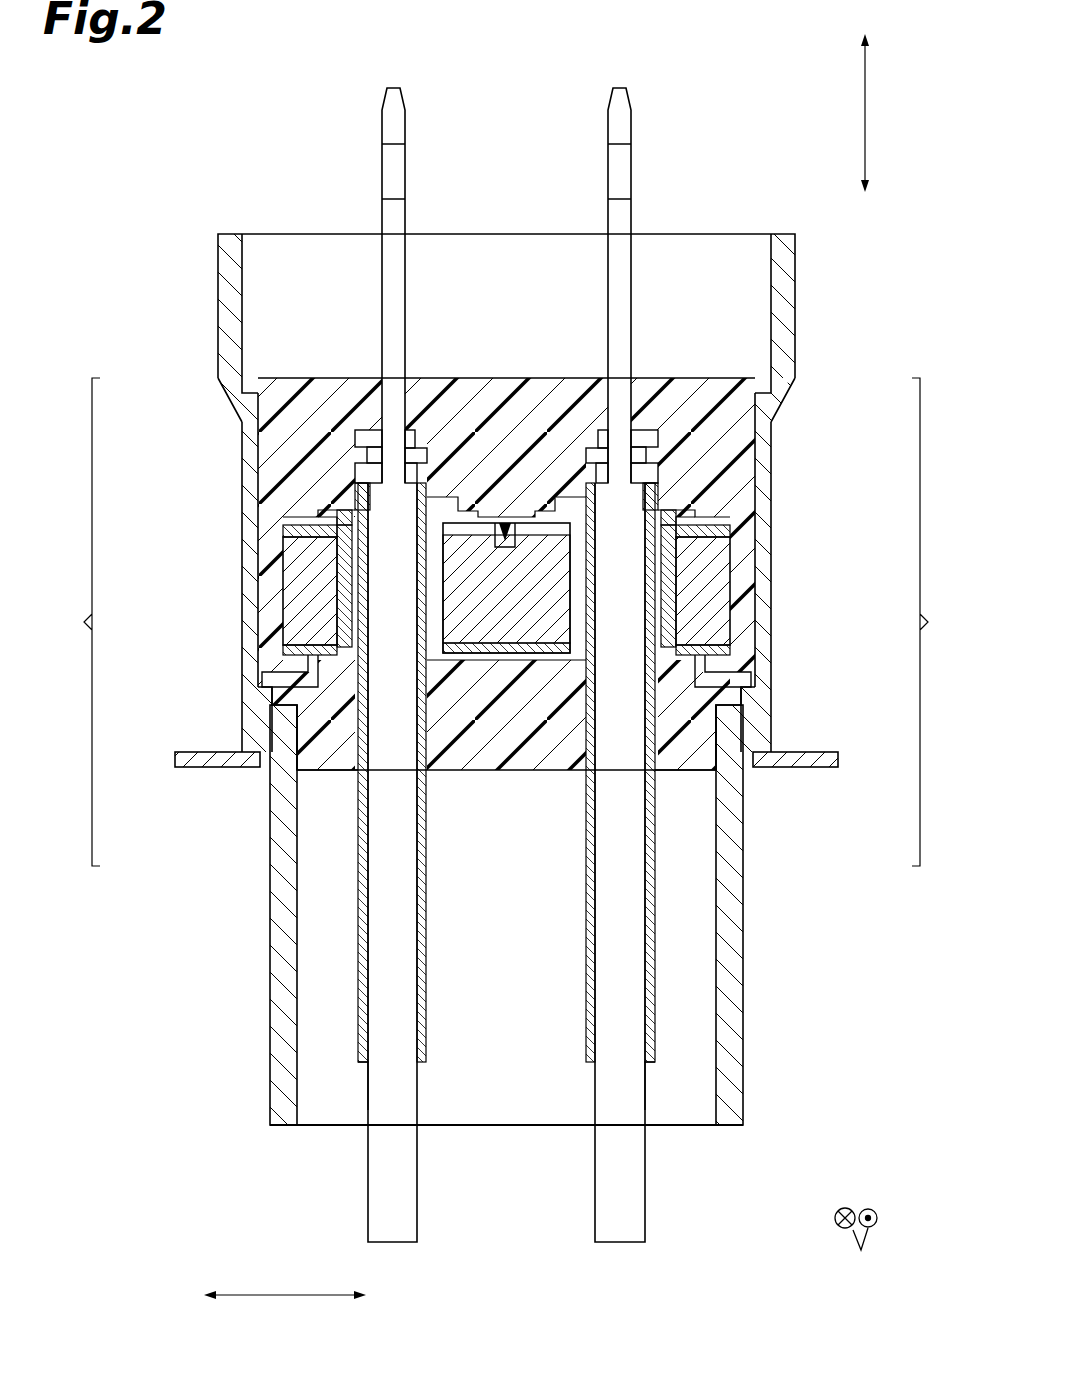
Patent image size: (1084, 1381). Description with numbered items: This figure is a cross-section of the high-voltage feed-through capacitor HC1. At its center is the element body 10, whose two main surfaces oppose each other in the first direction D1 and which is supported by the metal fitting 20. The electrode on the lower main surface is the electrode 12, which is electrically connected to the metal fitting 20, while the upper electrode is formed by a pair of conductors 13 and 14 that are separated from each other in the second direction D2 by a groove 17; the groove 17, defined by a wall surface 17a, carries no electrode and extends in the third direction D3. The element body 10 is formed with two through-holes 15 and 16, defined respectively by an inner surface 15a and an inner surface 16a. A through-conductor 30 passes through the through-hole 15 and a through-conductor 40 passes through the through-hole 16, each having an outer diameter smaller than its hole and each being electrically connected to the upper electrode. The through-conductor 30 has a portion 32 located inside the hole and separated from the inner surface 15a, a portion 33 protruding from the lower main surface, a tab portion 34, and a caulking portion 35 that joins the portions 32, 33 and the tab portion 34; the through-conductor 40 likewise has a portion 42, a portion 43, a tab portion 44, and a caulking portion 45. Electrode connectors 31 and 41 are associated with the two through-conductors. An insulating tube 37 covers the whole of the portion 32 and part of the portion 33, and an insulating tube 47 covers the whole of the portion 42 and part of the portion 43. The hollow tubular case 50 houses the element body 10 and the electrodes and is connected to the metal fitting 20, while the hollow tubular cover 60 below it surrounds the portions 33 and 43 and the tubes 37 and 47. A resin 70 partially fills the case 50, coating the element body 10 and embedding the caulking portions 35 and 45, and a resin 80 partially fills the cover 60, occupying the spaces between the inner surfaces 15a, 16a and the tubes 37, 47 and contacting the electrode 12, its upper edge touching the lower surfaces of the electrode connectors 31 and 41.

The high-voltage feed-through capacitor HC1 is at (245, 116).
The first direction D1 is at (873, 108).
The second direction D2 is at (290, 1300).
The third direction D3 is at (857, 1247).
The element body 10 is at (300, 600).
The electrode 12 is at (300, 655).
The conductor 13 is at (305, 540).
The conductor 14 is at (733, 530).
The through-hole 15 is at (300, 755).
The inner surface 15a is at (348, 557).
The through-hole 16 is at (700, 735).
The inner surface 16a is at (663, 577).
The groove 17 is at (505, 512).
The wall surface 17a is at (516, 524).
The metal fitting 20 is at (228, 752).
The through-conductor 30 is at (162, 622).
The electrode connector 31 is at (335, 503).
The portion 32 is at (347, 477).
The portion 33 is at (390, 737).
The tab portion 34 is at (387, 407).
The caulking portion 35 is at (355, 437).
The tube 37 is at (362, 1062).
The through-conductor 40 is at (852, 622).
The electrode connector 41 is at (693, 503).
The portion 42 is at (673, 487).
The portion 43 is at (620, 737).
The tab portion 44 is at (640, 425).
The caulking portion 45 is at (650, 458).
The tube 47 is at (648, 1062).
The case 50 is at (796, 256).
The cover 60 is at (743, 1075).
The resin 70 is at (442, 415).
The resin 80 is at (512, 720).